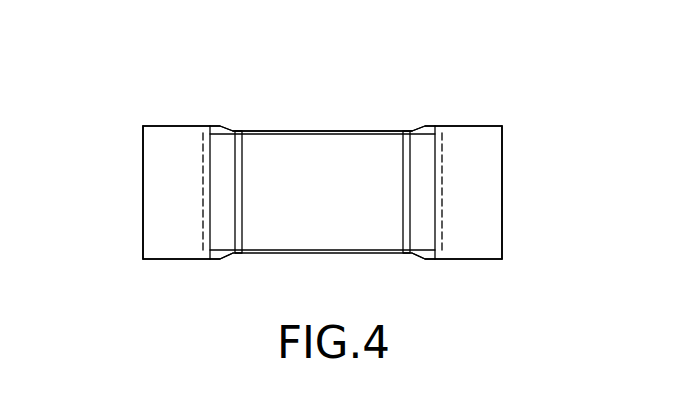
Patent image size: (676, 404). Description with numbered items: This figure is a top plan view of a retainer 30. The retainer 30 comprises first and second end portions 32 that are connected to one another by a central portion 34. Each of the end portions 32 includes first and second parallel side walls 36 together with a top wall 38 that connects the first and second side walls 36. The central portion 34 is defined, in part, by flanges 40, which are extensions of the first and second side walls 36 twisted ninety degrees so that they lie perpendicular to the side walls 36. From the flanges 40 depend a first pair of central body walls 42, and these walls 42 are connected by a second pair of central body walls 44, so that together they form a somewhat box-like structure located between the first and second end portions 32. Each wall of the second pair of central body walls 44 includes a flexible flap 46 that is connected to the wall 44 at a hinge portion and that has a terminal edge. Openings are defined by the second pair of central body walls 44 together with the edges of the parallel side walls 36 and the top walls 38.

The retainer 30 is at (112, 162).
The end portion 32 is at (186, 95).
The central portion 34 is at (329, 94).
The side wall 36 is at (158, 125).
The top wall 38 is at (160, 212).
The flange 40 is at (262, 126).
The first pair of central body walls 42 is at (373, 140).
The second pair of central body walls 44 is at (405, 215).
The flexible flap 46 is at (223, 238).